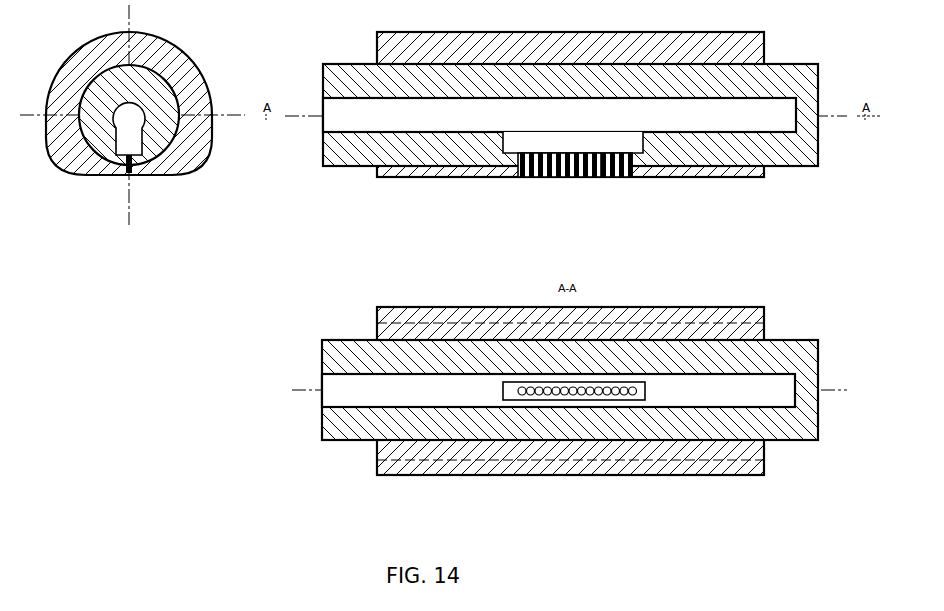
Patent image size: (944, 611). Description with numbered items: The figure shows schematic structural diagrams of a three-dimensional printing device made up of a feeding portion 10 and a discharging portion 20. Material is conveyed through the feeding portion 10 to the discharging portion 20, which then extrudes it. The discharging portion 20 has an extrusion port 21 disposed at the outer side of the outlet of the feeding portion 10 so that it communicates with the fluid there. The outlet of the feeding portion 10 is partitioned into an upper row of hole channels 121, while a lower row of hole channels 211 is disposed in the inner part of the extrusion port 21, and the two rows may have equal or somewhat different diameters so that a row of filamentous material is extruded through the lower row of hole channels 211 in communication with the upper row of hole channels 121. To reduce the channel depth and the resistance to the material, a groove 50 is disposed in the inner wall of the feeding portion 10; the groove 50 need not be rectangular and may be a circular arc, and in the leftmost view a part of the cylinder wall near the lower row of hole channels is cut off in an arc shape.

The feeding portion 10 is at (150, 116).
The discharging portion 20 is at (172, 172).
The groove 50 is at (125, 143).
The extrusion port 21 is at (632, 182).
The upper row of hole channels 121 is at (637, 178).
The lower row of hole channels 211 is at (607, 178).